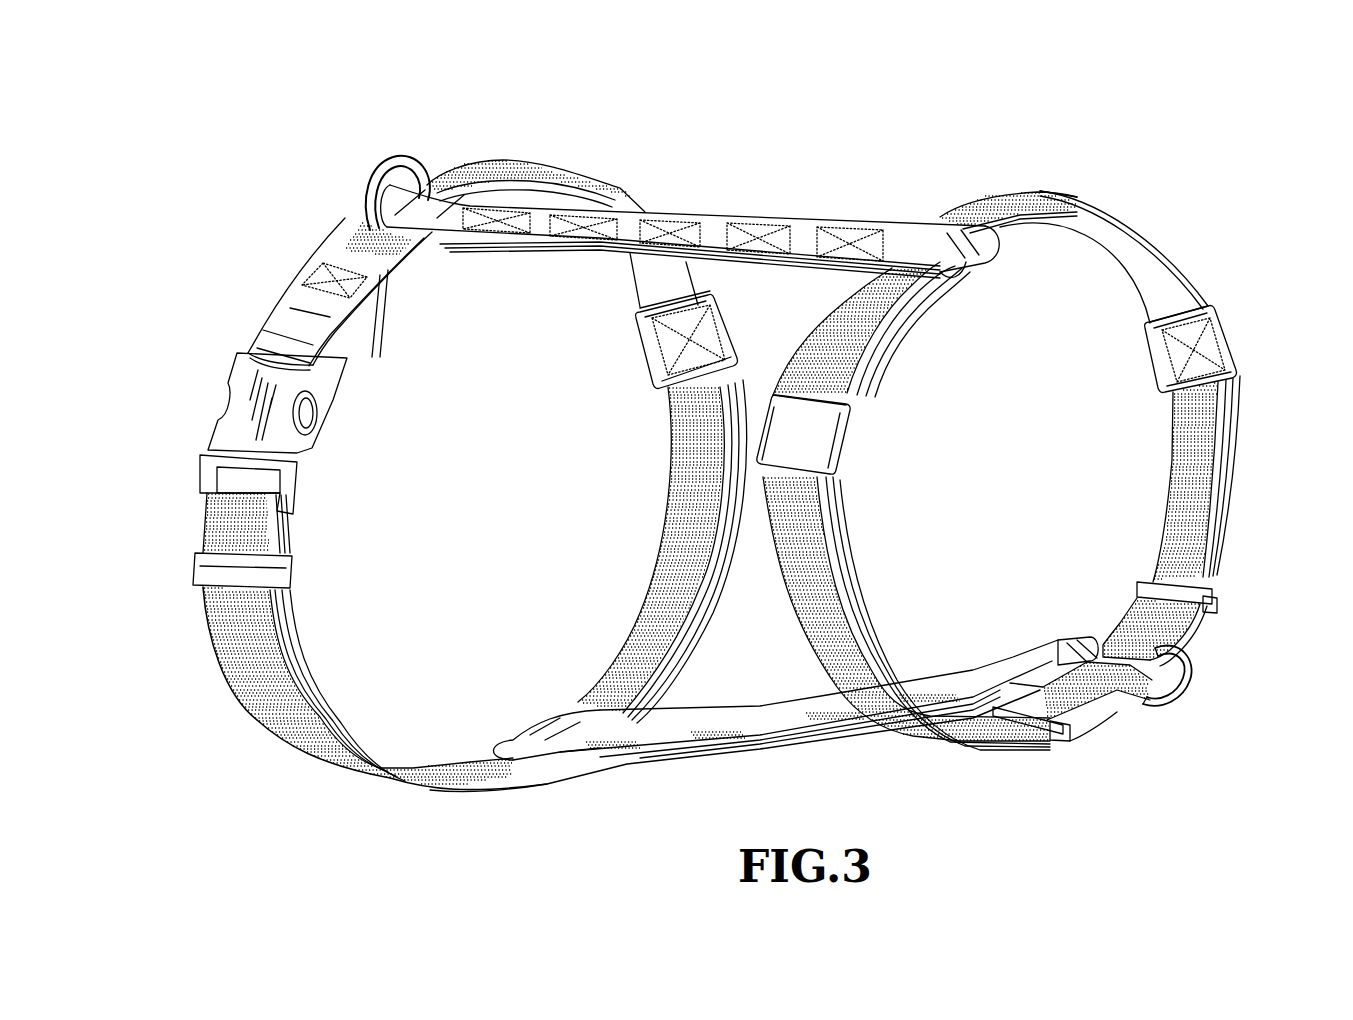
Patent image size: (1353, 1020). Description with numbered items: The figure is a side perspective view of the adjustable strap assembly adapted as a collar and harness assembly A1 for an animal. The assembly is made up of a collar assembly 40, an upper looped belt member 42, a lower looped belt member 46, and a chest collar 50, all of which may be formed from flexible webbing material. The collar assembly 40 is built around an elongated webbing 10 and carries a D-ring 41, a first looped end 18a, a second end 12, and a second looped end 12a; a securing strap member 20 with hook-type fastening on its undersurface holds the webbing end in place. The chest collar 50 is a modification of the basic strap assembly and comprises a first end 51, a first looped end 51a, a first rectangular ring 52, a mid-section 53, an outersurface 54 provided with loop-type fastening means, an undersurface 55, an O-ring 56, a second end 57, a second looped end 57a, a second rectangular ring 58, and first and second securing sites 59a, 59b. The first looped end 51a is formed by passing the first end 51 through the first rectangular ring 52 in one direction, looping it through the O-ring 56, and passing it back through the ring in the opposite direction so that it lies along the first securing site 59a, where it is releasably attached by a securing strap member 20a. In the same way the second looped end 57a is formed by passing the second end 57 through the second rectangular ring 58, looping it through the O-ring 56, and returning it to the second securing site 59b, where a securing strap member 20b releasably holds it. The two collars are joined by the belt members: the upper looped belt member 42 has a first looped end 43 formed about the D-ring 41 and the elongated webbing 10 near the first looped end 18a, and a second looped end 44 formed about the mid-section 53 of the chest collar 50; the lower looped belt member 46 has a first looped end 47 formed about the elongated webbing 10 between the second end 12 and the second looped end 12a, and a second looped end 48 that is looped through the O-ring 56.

The collar and harness assembly A1 is at (650, 112).
The elongated webbing 10 is at (362, 776).
The second end 12 is at (665, 405).
The second looped end 12a is at (200, 528).
The first looped end 18a is at (262, 335).
The securing strap member 20 is at (642, 350).
The securing strap member 20a is at (853, 446).
The securing strap member 20b is at (1240, 340).
The collar assembly 40 is at (224, 739).
The D-ring 41 is at (372, 178).
The upper looped belt member 42 is at (706, 212).
The first looped end 43 is at (350, 222).
The second looped end 44 is at (946, 282).
The lower looped belt member 46 is at (783, 740).
The first looped end 47 is at (590, 762).
The second looped end 48 is at (1040, 650).
The chest collar 50 is at (1250, 459).
The first end 51 is at (842, 500).
The first looped end 51a is at (1105, 728).
The first rectangular ring 52 is at (1070, 745).
The mid-section 53 is at (949, 218).
The outersurface 54 is at (842, 308).
The undersurface 55 is at (1136, 240).
The O-ring 56 is at (1190, 692).
The second end 57 is at (1222, 415).
The second looped end 57a is at (1210, 650).
The second rectangular ring 58 is at (1215, 596).
The first securing site 59a is at (795, 393).
The second securing site 59b is at (1210, 305).